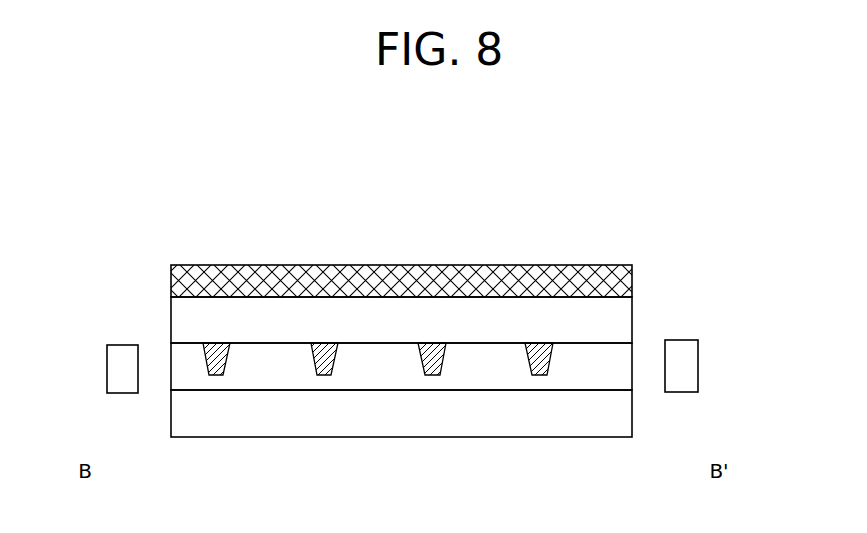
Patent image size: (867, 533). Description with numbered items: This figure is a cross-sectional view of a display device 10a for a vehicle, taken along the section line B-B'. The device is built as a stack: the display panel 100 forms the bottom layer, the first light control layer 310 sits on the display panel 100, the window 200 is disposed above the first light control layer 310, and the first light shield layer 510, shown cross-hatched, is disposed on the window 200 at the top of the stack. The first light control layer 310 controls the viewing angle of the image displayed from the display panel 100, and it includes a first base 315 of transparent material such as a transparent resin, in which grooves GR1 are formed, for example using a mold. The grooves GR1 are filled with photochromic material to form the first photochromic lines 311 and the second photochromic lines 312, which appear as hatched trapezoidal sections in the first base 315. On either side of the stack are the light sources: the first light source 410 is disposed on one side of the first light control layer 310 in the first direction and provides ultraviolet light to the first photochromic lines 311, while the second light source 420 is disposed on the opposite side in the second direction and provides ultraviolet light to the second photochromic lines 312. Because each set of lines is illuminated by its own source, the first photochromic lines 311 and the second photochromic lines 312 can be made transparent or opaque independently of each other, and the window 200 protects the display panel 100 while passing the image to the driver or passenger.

The display device 10a is at (650, 228).
The first light shield layer 510 is at (171, 282).
The window 200 is at (171, 327).
The first light control layer 310 is at (305, 192).
The first photochromic lines 311 is at (326, 343).
The first base 315 is at (380, 357).
The second photochromic lines 312 is at (434, 343).
The grooves GR1 is at (325, 375).
The display panel 100 is at (171, 415).
The second light source 420 is at (113, 368).
The first light source 410 is at (690, 367).